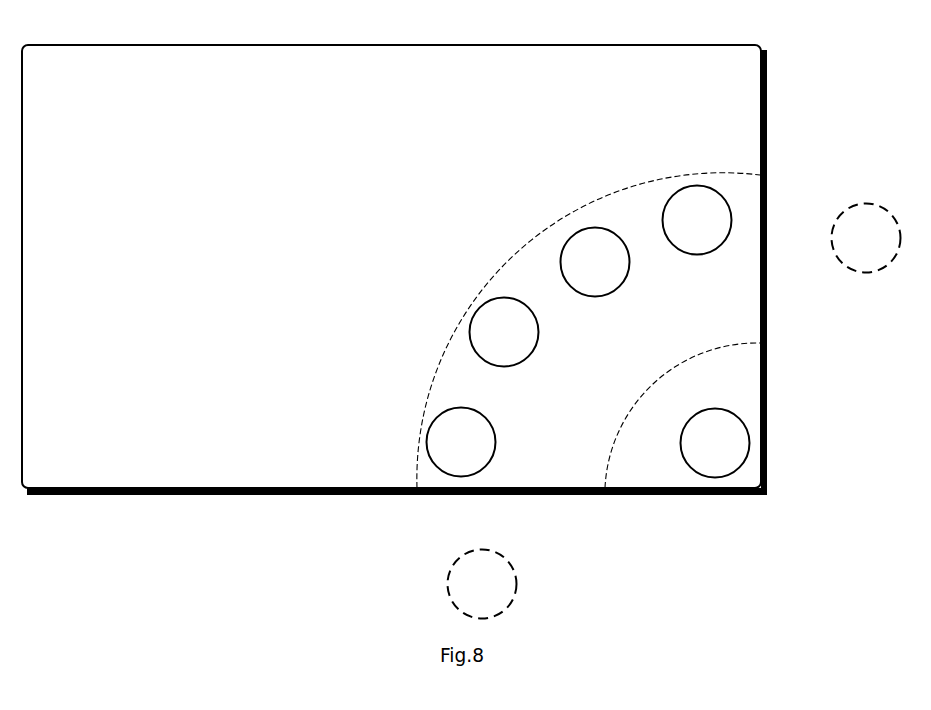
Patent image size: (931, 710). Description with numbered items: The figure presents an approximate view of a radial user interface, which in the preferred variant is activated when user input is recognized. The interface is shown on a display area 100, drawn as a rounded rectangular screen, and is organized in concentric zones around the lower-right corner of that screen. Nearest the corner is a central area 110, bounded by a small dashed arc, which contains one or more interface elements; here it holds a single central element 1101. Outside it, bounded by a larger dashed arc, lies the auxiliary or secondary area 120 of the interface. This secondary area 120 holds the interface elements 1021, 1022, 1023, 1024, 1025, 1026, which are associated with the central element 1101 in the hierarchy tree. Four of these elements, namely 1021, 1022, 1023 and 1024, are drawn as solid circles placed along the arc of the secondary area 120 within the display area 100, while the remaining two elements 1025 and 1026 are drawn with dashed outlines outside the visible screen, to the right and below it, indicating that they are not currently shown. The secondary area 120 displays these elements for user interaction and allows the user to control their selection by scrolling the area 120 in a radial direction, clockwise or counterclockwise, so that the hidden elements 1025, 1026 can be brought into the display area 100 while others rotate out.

The display area 100 is at (674, 72).
The auxiliary area 120 is at (721, 280).
The central area 110 is at (723, 378).
The interface element 1021 is at (444, 450).
The interface element 1022 is at (487, 340).
The interface element 1023 is at (578, 270).
The interface element 1024 is at (680, 228).
The interface element 1025 is at (849, 246).
The interface element 1026 is at (465, 592).
The central element 1101 is at (698, 450).